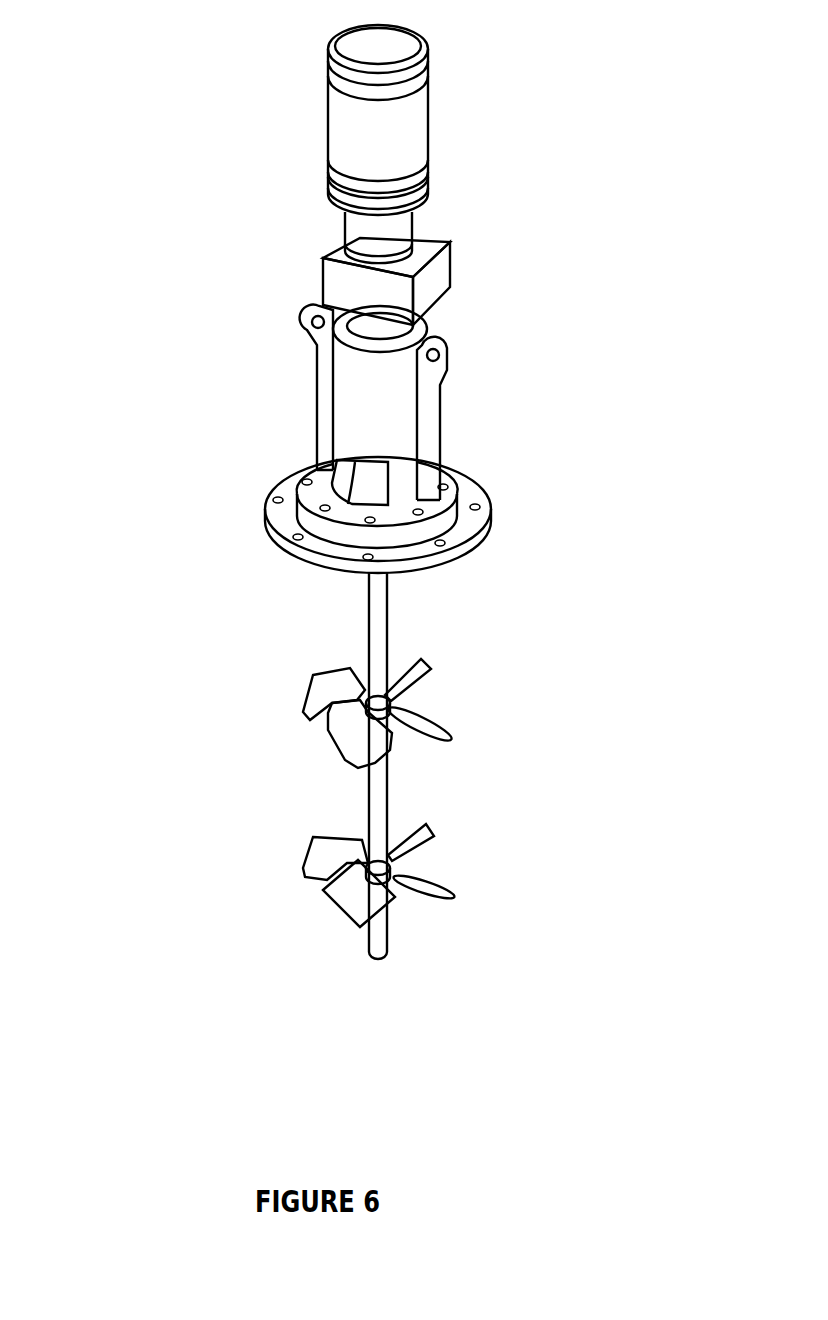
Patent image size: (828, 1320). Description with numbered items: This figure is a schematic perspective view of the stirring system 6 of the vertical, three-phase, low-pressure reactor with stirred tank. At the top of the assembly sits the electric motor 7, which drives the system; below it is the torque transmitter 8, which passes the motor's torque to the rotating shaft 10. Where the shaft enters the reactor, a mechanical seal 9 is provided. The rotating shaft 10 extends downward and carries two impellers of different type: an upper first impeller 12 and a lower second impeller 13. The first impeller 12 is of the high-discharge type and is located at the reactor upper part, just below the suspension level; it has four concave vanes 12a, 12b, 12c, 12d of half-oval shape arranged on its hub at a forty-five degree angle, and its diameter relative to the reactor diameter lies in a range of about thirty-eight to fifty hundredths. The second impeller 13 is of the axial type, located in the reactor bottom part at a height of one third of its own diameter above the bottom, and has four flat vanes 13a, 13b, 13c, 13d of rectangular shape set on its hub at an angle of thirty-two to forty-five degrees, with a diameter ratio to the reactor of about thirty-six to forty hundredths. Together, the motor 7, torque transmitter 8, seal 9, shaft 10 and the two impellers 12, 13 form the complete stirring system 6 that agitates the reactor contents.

The stirring system 6 is at (288, 385).
The electric motor 7 is at (445, 132).
The torque transmitter 8 is at (463, 268).
The mechanical seal 9 is at (388, 482).
The rotating shaft 10 is at (367, 620).
The upper first impeller 12 is at (401, 691).
The concave vane 12a is at (308, 672).
The concave vane 12b is at (430, 670).
The concave vane 12c is at (333, 742).
The concave vane 12d is at (443, 740).
The lower second impeller 13 is at (349, 910).
The flat vane 13a is at (327, 860).
The flat vane 13b is at (420, 855).
The flat vane 13c is at (355, 895).
The flat vane 13d is at (440, 900).